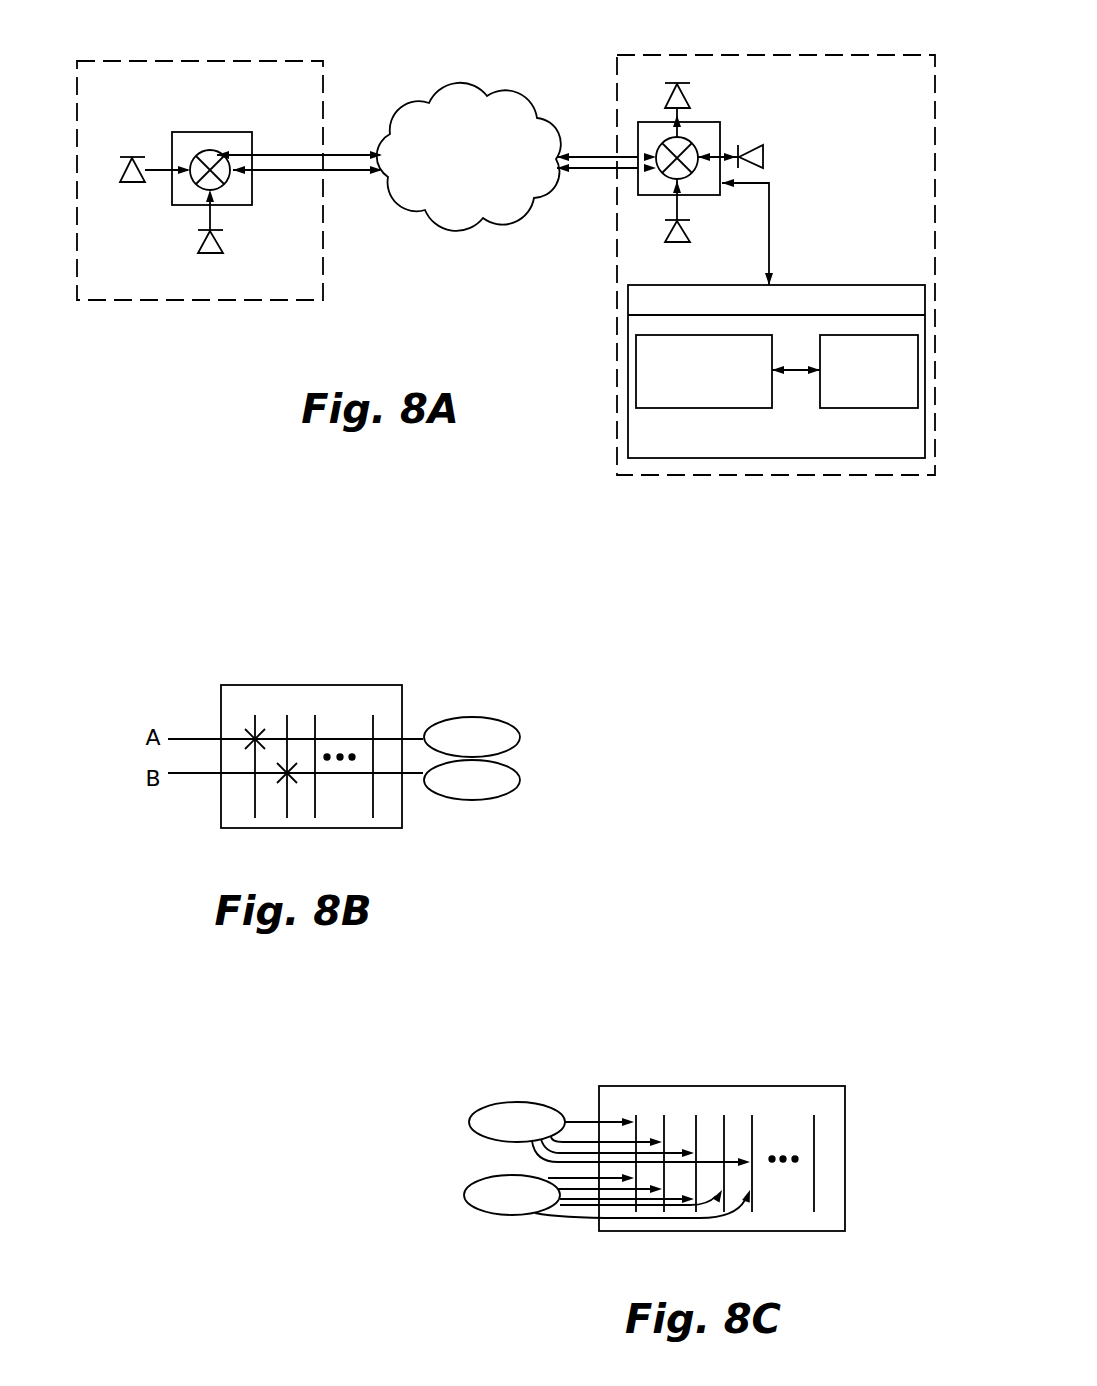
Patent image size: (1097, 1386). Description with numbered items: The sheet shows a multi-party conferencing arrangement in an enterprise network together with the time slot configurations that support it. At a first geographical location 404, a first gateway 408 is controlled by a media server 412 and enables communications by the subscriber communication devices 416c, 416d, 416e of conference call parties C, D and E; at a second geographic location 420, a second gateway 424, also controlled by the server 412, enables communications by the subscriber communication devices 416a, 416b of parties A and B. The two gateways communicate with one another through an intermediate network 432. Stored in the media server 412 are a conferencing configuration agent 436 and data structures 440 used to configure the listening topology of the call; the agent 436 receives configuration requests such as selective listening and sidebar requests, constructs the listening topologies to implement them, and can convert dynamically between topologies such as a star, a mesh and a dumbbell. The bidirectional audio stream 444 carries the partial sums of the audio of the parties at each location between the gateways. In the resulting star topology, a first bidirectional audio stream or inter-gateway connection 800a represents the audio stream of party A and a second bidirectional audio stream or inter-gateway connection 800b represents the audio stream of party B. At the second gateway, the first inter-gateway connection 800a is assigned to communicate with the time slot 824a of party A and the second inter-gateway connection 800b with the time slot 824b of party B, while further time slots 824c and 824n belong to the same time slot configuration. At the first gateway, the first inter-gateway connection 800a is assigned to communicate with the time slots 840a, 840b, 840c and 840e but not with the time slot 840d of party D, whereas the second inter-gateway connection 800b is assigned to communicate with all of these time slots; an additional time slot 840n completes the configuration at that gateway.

In FIG. 8A, the first geographical location 404 is at (748, 477).
In FIG. 8A, the first gateway 408 is at (722, 122).
In FIG. 8A, the media server 412 is at (845, 285).
In FIG. 8A, the subscriber communication device 416a is at (132, 185).
In FIG. 8A, the subscriber communication device 416b is at (222, 250).
In FIG. 8A, the subscriber communication device 416c is at (688, 240).
In FIG. 8A, the subscriber communication device 416d is at (760, 172).
In FIG. 8A, the subscriber communication device 416e is at (684, 93).
In FIG. 8A, the second geographic location 420 is at (165, 300).
In FIG. 8A, the second gateway 424 is at (213, 130).
In FIG. 8A, the intermediate network 432 is at (470, 222).
In FIG. 8A, the conferencing configuration agent 436 is at (713, 408).
In FIG. 8A, the data structures 440 is at (865, 408).
In FIG. 8A, the bidirectional audio stream 444 is at (280, 168).
In FIG. 8A, the first bidirectional audio stream 800a is at (352, 150).
In FIG. 8B, the first bidirectional audio stream 800a is at (478, 717).
In FIG. 8C, the first bidirectional audio stream 800a is at (512, 1101).
In FIG. 8A, the second bidirectional audio stream 800b is at (343, 175).
In FIG. 8B, the second bidirectional audio stream 800b is at (468, 800).
In FIG. 8C, the second bidirectional audio stream 800b is at (497, 1215).
In FIG. 8B, the time slot 824a is at (253, 717).
In FIG. 8B, the time slot 824b is at (285, 716).
In FIG. 8B, the time slot 824c is at (315, 718).
In FIG. 8B, the time slot 824n is at (375, 717).
In FIG. 8C, the time slot 840a is at (636, 1116).
In FIG. 8C, the time slot 840b is at (664, 1116).
In FIG. 8C, the time slot 840c is at (696, 1116).
In FIG. 8C, the time slot 840d is at (724, 1116).
In FIG. 8C, the time slot 840e is at (752, 1116).
In FIG. 8C, the time slot 840n is at (815, 1130).